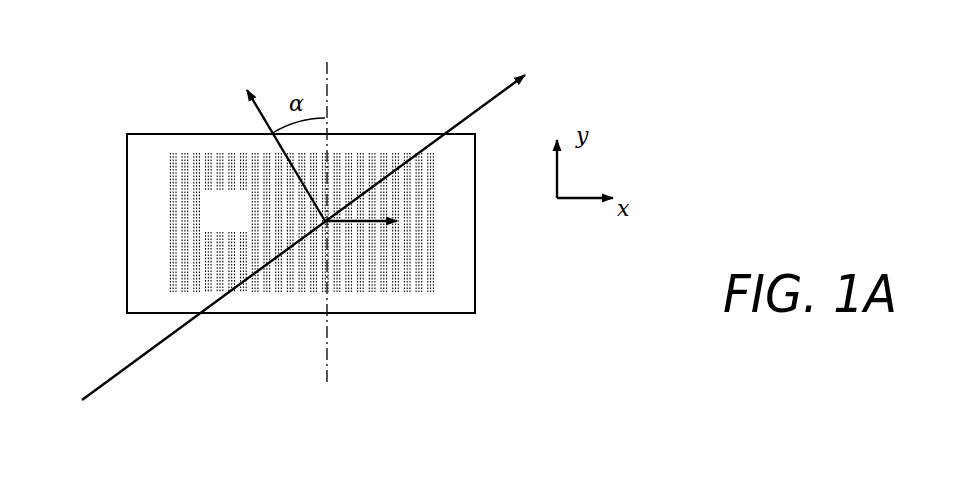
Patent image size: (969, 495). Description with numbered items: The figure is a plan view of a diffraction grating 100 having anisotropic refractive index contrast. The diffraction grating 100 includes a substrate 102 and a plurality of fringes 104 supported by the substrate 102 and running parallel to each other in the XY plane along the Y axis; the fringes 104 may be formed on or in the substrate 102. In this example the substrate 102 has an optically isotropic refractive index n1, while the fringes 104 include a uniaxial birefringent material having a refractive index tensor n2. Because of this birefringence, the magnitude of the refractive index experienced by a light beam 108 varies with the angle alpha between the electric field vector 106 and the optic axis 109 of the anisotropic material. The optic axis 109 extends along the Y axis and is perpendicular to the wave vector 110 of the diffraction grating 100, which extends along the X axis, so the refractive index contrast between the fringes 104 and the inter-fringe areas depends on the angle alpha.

The diffraction grating 100 is at (535, 300).
The substrate 102 is at (150, 252).
The fringes 104 is at (169, 178).
The electric field vector 106 is at (273, 127).
The light beam 108 is at (165, 339).
The optic axis 109 is at (328, 62).
The wave vector 110 is at (370, 225).